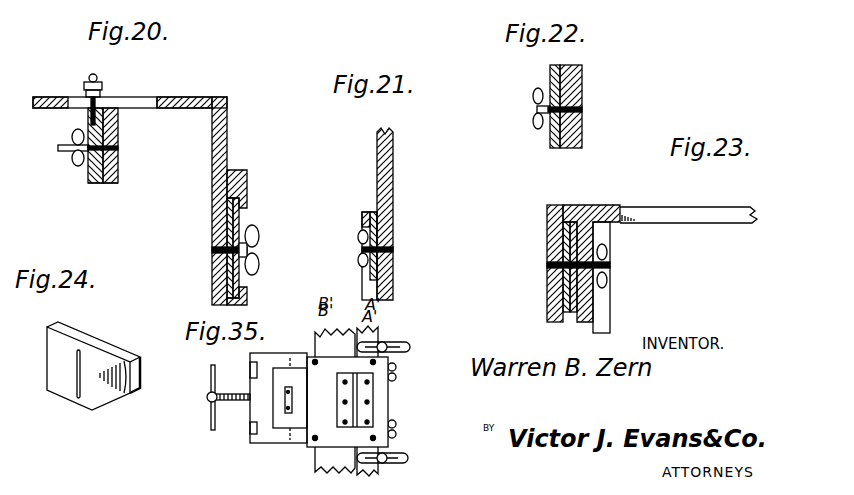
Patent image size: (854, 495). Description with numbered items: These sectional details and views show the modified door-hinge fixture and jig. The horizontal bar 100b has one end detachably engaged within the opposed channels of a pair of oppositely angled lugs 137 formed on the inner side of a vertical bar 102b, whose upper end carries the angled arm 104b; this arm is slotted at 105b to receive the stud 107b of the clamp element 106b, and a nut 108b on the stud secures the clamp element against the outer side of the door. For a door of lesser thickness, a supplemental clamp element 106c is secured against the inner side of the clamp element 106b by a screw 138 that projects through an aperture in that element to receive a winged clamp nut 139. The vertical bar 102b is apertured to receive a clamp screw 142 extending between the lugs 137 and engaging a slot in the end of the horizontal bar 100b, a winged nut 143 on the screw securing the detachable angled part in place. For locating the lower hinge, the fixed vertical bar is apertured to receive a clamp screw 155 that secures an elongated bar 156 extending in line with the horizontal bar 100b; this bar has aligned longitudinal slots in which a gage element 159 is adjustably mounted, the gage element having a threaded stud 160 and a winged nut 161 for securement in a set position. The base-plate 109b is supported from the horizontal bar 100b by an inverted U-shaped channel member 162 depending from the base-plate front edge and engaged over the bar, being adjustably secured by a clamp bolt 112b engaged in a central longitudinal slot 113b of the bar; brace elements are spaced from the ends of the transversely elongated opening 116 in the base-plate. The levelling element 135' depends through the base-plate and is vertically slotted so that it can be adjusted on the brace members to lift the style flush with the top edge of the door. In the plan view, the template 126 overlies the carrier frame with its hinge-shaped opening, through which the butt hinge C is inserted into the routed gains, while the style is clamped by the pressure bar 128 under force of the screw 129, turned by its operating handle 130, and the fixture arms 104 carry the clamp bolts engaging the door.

In FIG. 20, the slot 105b is at (132, 100).
In FIG. 20, the angled arm 104b is at (190, 100).
In FIG. 20, the vertical bar 102b is at (228, 121).
In FIG. 21, the vertical bar 102b is at (392, 135).
In FIG. 20, the oppositely angled lugs 137 is at (247, 186).
In FIG. 20, the horizontal bar 100b is at (227, 214).
In FIG. 21, the horizontal bar 100b is at (366, 212).
In FIG. 23, the horizontal bar 100b is at (570, 222).
In FIG. 20, the clamp screw 142 is at (212, 249).
In FIG. 20, the winged nut 143 is at (249, 231).
In FIG. 20, the clamp element 106b is at (88, 172).
In FIG. 20, the supplemental clamp element 106c is at (101, 185).
In FIG. 20, the winged clamp nut 139 is at (72, 153).
In FIG. 20, the screw 138 is at (67, 140).
In FIG. 20, the stud 107b is at (85, 79).
In FIG. 20, the nut 108b is at (100, 80).
In FIG. 21, the elongated bar 156 is at (362, 222).
In FIG. 22, the elongated bar 156 is at (550, 68).
In FIG. 21, the clamp screw 155 is at (393, 250).
In FIG. 22, the gage element 159 is at (582, 78).
In FIG. 22, the threaded stud 160 is at (582, 108).
In FIG. 22, the winged nut 161 is at (531, 97).
In FIG. 23, the inverted U-shaped channel member 162 is at (547, 210).
In FIG. 23, the base-plate 109b is at (600, 212).
In FIG. 23, the clamp bolt 112b is at (608, 252).
In FIG. 23, the transversely elongated opening 116 is at (697, 212).
In FIG. 23, the slot 113b is at (547, 263).
In FIG. 24, the levelling element 135' is at (93, 356).
In FIG. 35, the template 126 is at (312, 360).
In FIG. 35, the hinge C is at (372, 393).
In FIG. 35, the clamp or pressure bar 128 is at (297, 418).
In FIG. 35, the screw 129 is at (229, 393).
In FIG. 35, the operating handle 130 is at (211, 418).
In FIG. 35, the horizontal arm 104 is at (412, 343).